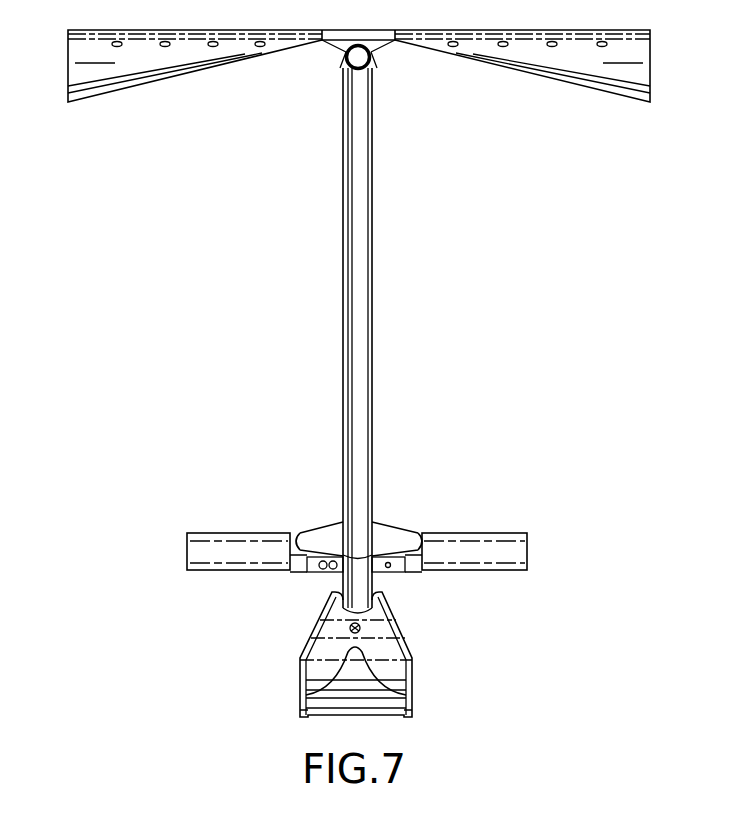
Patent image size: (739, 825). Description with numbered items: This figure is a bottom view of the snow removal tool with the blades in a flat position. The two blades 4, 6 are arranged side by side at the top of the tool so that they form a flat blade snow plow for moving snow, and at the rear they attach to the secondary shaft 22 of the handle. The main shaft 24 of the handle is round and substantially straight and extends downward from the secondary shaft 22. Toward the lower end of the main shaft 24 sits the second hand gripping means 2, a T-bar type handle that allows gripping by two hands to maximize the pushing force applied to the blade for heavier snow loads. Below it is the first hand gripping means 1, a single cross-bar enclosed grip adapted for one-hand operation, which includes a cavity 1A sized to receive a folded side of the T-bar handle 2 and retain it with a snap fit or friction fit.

The first hand gripping means 1 is at (302, 695).
The cavity 1A is at (390, 648).
The second hand gripping means 2 is at (463, 536).
The blade 4 is at (87, 63).
The blade 6 is at (636, 72).
The secondary shaft 22 is at (372, 65).
The main shaft 24 is at (370, 343).